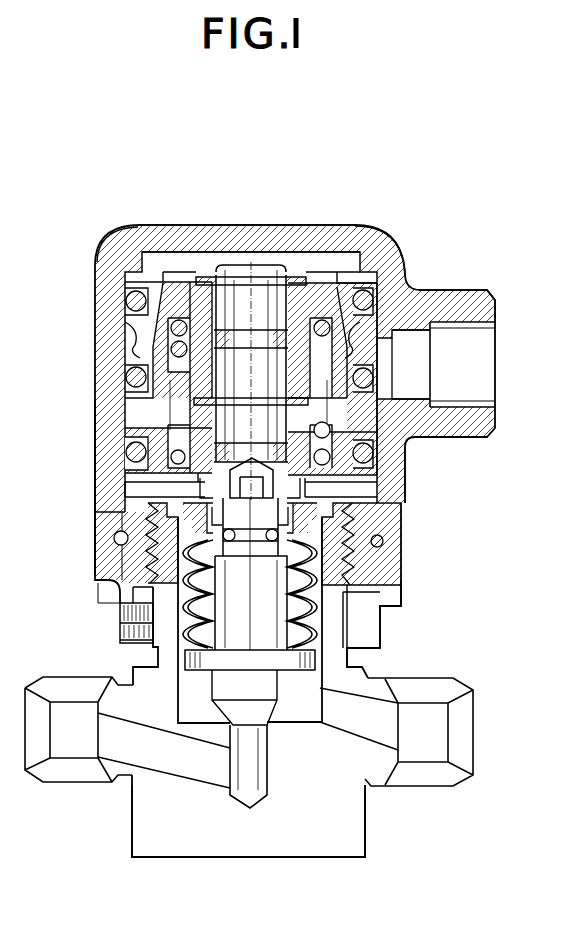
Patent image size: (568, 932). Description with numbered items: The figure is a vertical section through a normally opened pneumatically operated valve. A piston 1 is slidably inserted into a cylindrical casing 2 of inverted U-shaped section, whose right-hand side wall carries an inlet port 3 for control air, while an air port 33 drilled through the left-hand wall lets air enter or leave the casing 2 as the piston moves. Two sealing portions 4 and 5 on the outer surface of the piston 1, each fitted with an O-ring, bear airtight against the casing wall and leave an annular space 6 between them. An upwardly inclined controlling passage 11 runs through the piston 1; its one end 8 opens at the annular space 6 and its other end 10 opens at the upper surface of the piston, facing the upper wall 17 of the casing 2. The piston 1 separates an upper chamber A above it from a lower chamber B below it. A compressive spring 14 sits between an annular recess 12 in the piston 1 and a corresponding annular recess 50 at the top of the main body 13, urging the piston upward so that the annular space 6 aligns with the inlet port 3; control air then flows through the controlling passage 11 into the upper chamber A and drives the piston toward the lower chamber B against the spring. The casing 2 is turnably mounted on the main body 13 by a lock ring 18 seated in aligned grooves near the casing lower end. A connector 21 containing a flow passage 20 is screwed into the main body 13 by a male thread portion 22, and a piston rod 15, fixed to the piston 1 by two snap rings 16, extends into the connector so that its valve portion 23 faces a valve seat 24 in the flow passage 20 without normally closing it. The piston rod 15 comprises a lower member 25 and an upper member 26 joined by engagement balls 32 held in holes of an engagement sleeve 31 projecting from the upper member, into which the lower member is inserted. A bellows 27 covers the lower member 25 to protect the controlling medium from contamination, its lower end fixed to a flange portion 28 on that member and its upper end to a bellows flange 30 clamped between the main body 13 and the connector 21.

The piston 1 is at (341, 228).
The cylindrical casing 2 is at (407, 502).
The inlet port 3 is at (395, 343).
The sealing portion 4 is at (125, 300).
The sealing portion 5 is at (128, 384).
The annular space 6 is at (130, 338).
The one end of controlling passage 8 is at (128, 345).
The other end of controlling passage 10 is at (163, 280).
The controlling passage 11 is at (130, 263).
The annular recess 12 is at (394, 380).
The main body 13 is at (402, 600).
The compressive spring 14 is at (165, 455).
The piston rod 15 is at (249, 264).
The snap ring 16 is at (297, 254).
The upper wall 17 is at (200, 225).
The lock ring 18 is at (114, 538).
The flow passage 20 is at (385, 722).
The connector 21 is at (166, 850).
The male thread portion 22 is at (355, 550).
The valve portion 23 is at (318, 712).
The valve seat 24 is at (250, 752).
The one member 25 is at (230, 603).
The other member 26 is at (335, 315).
The bellows 27 is at (350, 586).
The flange portion 28 is at (180, 660).
The bellows flange 30 is at (148, 512).
The engagement sleeve 31 is at (305, 488).
The engagement balls 32 is at (305, 533).
The air port 33 is at (95, 414).
The annular recess 50 is at (384, 452).
The upper chamber A is at (343, 270).
The lower chamber B is at (432, 400).